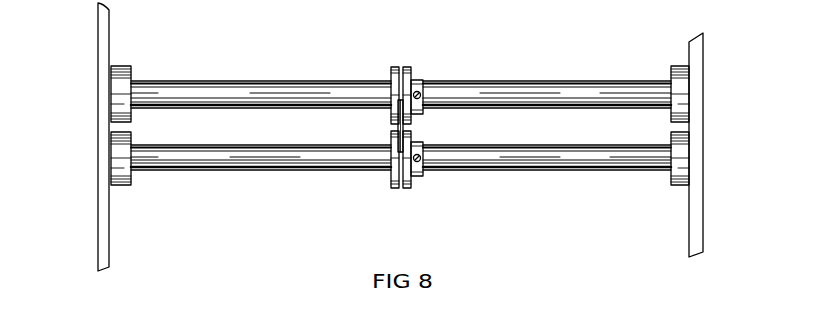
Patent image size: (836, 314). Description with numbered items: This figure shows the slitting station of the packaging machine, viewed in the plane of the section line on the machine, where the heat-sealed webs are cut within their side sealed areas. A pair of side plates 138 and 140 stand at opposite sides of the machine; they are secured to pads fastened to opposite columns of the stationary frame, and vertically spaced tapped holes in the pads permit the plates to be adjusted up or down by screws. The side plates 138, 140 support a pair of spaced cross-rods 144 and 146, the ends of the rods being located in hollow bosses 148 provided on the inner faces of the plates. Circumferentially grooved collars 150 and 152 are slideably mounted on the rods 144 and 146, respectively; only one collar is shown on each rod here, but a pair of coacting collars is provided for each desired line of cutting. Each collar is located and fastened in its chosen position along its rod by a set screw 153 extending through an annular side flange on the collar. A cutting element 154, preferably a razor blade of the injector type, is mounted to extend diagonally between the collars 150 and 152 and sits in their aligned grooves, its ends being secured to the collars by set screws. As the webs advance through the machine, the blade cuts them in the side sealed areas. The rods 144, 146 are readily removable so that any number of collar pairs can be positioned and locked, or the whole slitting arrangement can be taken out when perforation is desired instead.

The side plate 138 is at (98, 33).
The side plate 140 is at (704, 52).
The cross-rod 144 is at (198, 82).
The cross-rod 146 is at (203, 171).
The hollow boss 148 is at (127, 67).
The grooved collar 150 is at (407, 66).
The grooved collar 152 is at (395, 190).
The set screw 153 is at (416, 90).
The cutting element 154 is at (398, 127).